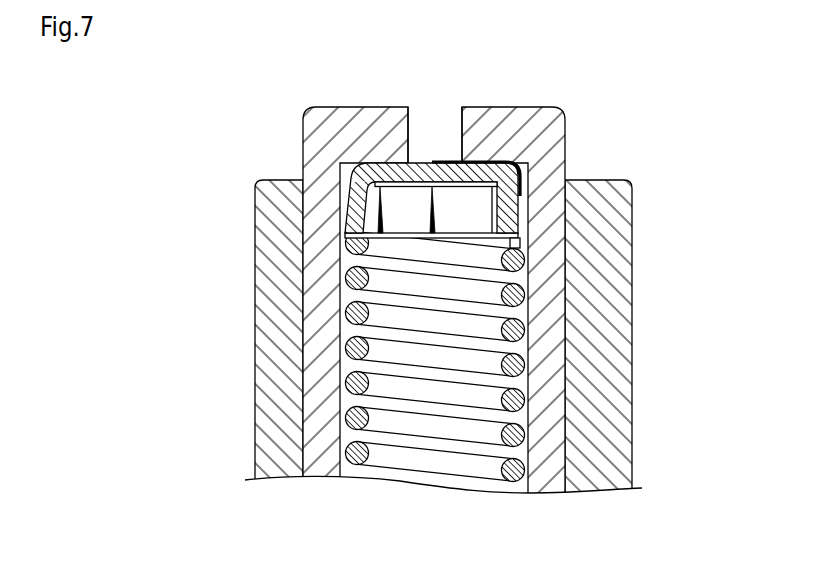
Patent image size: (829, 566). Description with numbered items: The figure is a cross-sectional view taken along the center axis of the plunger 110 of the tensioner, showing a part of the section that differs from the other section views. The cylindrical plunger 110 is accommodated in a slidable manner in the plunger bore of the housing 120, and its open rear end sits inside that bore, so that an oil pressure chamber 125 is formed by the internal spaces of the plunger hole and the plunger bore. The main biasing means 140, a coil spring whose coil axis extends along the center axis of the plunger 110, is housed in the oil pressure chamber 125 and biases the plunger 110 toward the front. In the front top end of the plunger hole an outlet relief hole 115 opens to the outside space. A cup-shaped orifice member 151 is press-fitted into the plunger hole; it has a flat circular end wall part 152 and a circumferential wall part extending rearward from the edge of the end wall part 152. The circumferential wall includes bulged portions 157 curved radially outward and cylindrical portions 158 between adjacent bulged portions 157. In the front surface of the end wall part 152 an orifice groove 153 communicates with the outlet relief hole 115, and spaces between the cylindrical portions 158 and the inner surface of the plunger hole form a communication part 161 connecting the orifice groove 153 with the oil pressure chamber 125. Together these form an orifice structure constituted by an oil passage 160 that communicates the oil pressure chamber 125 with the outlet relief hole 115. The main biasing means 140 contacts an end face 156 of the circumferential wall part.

The plunger 110 is at (312, 133).
The outlet relief hole 115 is at (455, 127).
The housing 120 is at (265, 348).
The oil pressure chamber 125 is at (433, 376).
The main biasing means 140 is at (357, 420).
The orifice member 151 is at (435, 130).
The end wall part 152 is at (397, 163).
The orifice groove 153 is at (472, 162).
The end face 156 is at (510, 247).
The bulged portions 157 is at (348, 217).
The cylindrical portions 158 is at (510, 217).
The oil passage 160 is at (564, 159).
The communication part 161 is at (518, 192).